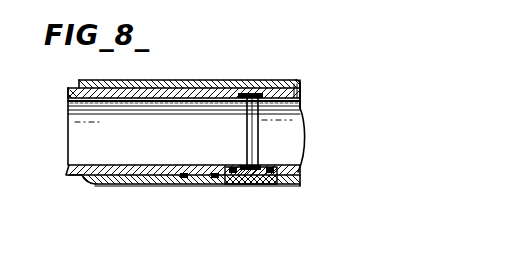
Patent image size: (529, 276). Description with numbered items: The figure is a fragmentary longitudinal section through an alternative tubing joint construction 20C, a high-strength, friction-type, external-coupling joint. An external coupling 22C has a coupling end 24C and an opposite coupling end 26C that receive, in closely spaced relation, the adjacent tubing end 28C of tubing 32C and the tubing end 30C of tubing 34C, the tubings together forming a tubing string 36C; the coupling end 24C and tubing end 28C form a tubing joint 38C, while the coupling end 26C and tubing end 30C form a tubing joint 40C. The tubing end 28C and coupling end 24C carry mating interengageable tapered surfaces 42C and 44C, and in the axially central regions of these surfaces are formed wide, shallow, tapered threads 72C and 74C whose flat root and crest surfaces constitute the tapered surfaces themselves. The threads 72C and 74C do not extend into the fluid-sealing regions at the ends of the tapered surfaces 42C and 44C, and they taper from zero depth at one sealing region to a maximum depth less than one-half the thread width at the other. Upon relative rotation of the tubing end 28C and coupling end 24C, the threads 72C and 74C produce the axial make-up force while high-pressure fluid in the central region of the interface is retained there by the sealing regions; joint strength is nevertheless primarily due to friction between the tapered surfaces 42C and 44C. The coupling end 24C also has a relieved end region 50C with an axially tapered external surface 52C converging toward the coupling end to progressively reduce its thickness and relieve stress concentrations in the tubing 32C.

The tubing joint construction 20C is at (258, 72).
The nut 22C is at (258, 187).
The coupling end 24C is at (133, 80).
The end wall 26C is at (302, 80).
The tubing end 28C is at (130, 165).
The tube body 30C is at (303, 150).
The tubing 32C is at (69, 92).
The threaded portion 34C is at (303, 97).
The lower wall end 36C is at (60, 172).
The tubing joint 38C is at (200, 196).
The lower sleeve 40C is at (306, 194).
The tapered surface 42C is at (247, 119).
The tapered surface 44C is at (190, 83).
The relieved end region 50C is at (99, 186).
The axially tapered external surface 52C is at (83, 181).
The tapered thread 72C is at (217, 187).
The tapered thread 74C is at (192, 187).